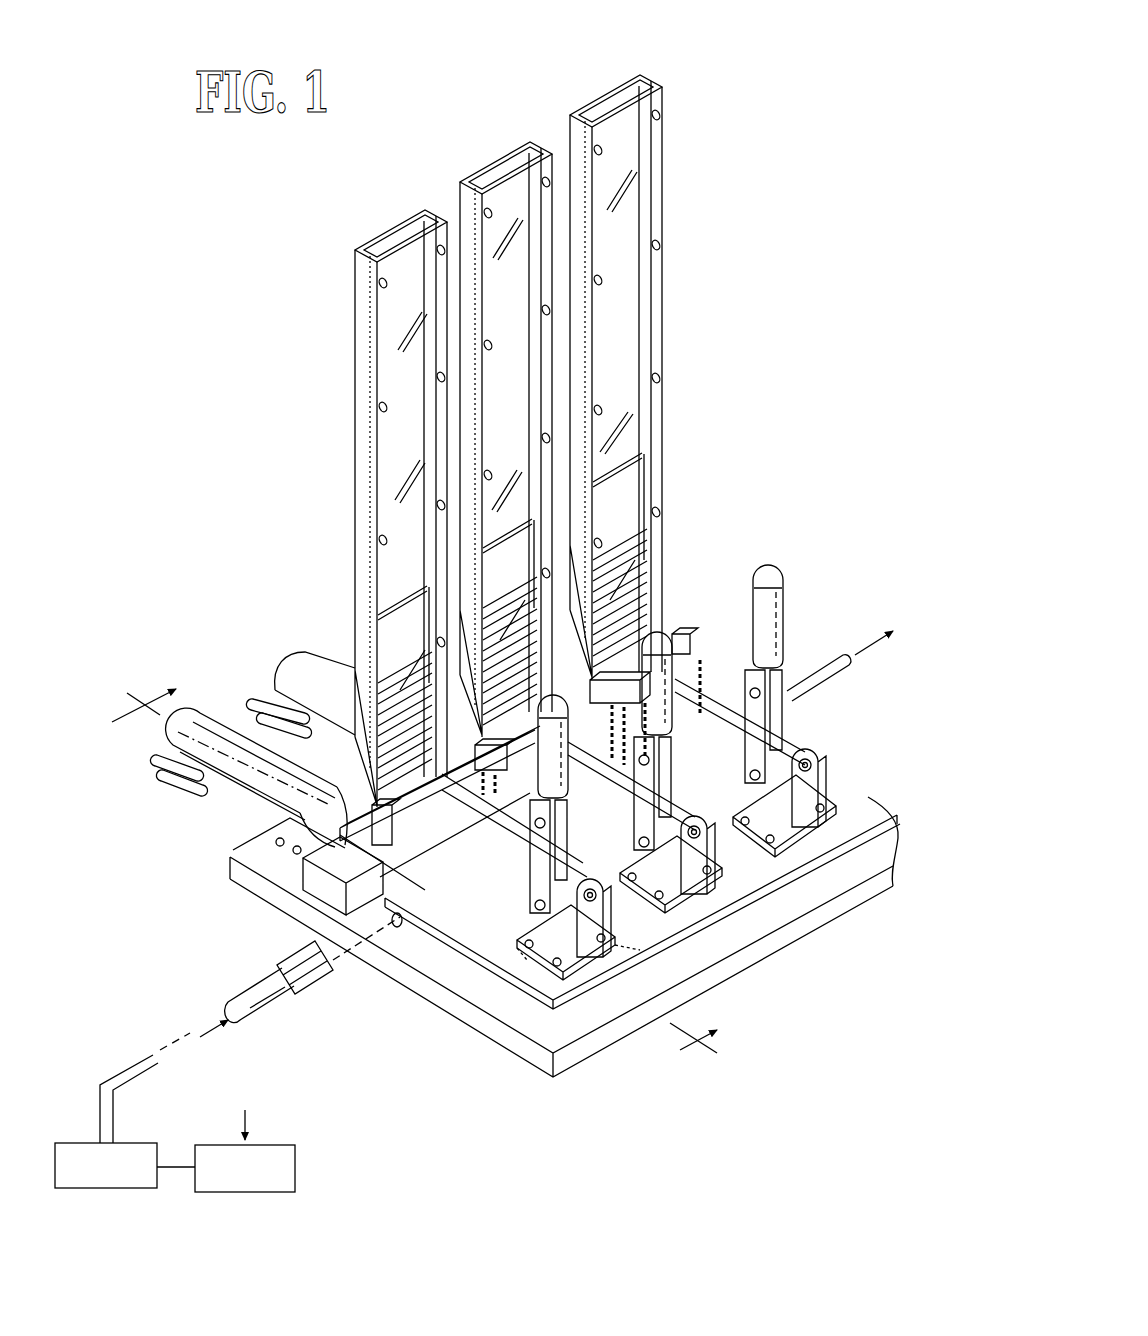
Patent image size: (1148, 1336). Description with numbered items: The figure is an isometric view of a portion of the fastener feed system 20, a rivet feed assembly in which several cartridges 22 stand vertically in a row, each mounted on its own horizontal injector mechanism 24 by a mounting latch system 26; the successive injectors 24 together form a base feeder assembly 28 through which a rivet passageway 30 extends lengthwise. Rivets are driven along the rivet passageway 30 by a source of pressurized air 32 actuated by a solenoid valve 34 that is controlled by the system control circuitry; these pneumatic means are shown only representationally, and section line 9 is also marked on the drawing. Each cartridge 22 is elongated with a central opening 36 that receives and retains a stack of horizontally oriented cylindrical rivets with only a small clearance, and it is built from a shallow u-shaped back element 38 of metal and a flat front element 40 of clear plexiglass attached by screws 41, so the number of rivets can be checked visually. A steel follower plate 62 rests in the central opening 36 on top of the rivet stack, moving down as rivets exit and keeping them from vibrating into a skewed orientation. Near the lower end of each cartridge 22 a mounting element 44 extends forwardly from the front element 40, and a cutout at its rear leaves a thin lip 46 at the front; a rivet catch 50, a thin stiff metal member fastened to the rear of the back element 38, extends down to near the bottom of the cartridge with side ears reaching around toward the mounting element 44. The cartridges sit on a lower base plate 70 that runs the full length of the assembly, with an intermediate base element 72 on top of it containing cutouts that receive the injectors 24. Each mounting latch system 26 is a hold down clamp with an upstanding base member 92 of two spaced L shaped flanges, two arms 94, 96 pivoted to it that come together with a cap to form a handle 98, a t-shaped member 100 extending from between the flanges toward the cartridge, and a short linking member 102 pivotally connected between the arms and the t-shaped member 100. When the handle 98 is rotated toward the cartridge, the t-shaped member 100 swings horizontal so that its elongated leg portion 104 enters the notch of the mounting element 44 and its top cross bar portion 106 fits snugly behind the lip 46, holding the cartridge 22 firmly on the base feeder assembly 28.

The section line 9- 9 is at (423, 859).
The fastener feed system 20 is at (330, 612).
The cartridge 22 is at (617, 68).
The injector mechanism 24 is at (312, 938).
The mounting latch system 26 is at (353, 904).
The base feeder assembly 28 is at (405, 992).
The rivet passageway 30 is at (398, 927).
The source of pressurized air 32 is at (140, 1190).
The solenoid valve 34 is at (283, 1192).
The central opening 36 is at (401, 232).
The back element 38 is at (355, 339).
The front element 40 is at (382, 313).
The screws 41 is at (380, 283).
The mounting element 44 is at (435, 851).
The lip 46 is at (343, 876).
The rivet catch 50 is at (268, 813).
The follower plate 62 is at (386, 637).
The lower base plate 70 is at (537, 1053).
The intermediate base element 72 is at (510, 1013).
The base member 92 is at (575, 945).
The arm 94 is at (533, 880).
The arm 96 is at (573, 843).
The handle 98 is at (533, 775).
The t-shaped member 100 is at (510, 927).
The linking member 102 is at (570, 822).
The elongated leg portion 104 is at (322, 914).
The top cross bar portion 106 is at (346, 768).